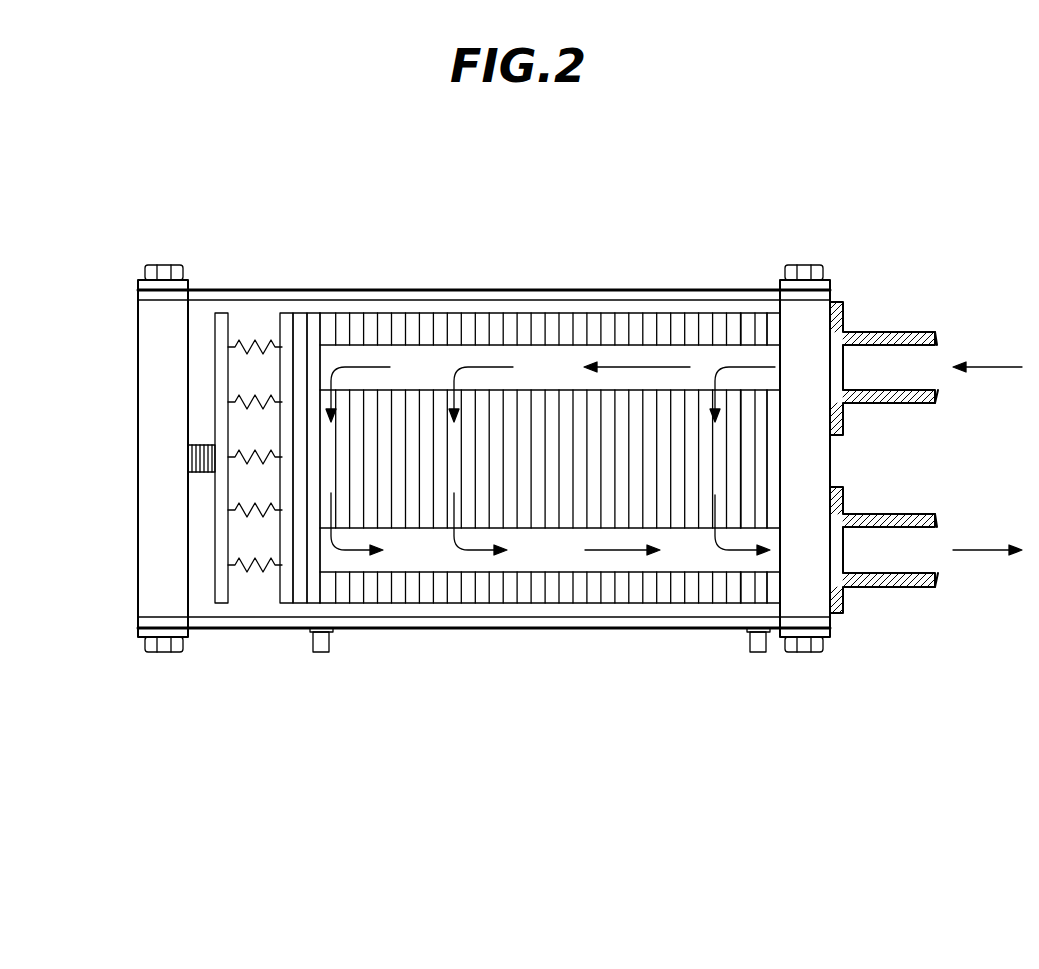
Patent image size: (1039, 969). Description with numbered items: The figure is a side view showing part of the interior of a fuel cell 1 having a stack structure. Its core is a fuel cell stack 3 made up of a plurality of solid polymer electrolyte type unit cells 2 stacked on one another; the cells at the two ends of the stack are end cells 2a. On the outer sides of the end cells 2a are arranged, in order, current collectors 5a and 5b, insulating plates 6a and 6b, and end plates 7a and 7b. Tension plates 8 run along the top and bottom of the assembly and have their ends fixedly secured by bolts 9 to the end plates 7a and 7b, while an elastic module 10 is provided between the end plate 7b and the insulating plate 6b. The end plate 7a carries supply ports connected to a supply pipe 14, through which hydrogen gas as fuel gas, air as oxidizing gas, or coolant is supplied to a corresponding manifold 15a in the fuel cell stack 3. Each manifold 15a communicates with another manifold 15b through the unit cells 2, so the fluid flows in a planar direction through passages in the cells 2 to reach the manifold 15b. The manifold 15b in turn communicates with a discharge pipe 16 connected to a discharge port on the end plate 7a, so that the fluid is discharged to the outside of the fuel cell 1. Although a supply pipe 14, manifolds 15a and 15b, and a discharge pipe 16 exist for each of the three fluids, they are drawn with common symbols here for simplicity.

The fuel cell 1 is at (378, 770).
The unit cell 2 is at (468, 592).
The end cell 2a is at (335, 592).
The fuel cell stack 3 is at (550, 497).
The current collector 5a is at (760, 324).
The current collector 5b is at (315, 324).
The insulating plate 6a is at (773, 324).
The insulating plate 6b is at (303, 324).
The end plate 7a is at (813, 322).
The end plate 7b is at (157, 363).
The tension plate 8 is at (598, 293).
The bolt 9 is at (165, 270).
The elastic module 10 is at (257, 326).
The supply pipe 14 is at (915, 402).
The manifold 15a is at (538, 360).
The manifold 15b is at (550, 597).
The discharge pipe 16 is at (915, 583).